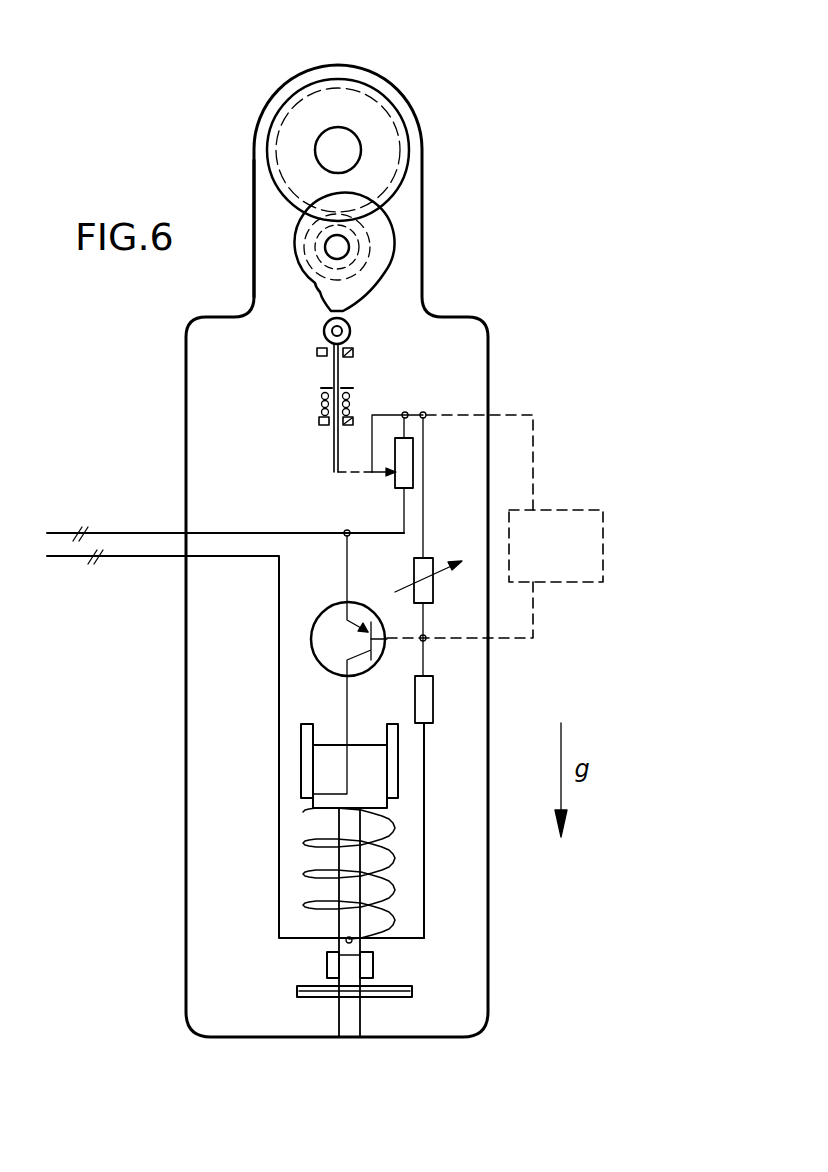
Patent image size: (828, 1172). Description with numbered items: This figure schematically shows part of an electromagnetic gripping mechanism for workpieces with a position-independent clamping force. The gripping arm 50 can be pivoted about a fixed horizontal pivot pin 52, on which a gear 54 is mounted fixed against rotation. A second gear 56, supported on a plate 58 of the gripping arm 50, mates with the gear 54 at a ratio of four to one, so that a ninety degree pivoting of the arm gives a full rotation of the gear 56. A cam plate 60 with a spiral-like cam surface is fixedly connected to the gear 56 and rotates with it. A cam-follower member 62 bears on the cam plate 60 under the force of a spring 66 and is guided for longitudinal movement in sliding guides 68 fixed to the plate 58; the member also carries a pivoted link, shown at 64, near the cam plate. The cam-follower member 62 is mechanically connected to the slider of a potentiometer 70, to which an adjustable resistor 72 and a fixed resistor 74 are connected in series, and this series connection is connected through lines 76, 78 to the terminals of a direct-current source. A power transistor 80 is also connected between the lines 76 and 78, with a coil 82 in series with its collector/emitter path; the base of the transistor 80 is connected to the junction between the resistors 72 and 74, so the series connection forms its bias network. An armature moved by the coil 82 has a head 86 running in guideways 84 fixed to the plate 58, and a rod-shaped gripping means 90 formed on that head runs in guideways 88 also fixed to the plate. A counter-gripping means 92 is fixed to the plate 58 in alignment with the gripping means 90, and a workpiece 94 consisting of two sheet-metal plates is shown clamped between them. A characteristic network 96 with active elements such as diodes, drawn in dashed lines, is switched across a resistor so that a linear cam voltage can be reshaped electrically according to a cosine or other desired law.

The gripping arm 50 is at (488, 378).
The pivot pin 52 is at (343, 140).
The gear 54 is at (382, 147).
The second gear 56 is at (362, 235).
The plate 58 is at (265, 223).
The cam plate 60 is at (377, 265).
The cam-follower member 62 is at (333, 370).
The pivot 64 is at (346, 322).
The spring 66 is at (323, 398).
The sliding guides 68 is at (352, 415).
The potentiometer 70 is at (403, 463).
The adjustable resistor 72 is at (420, 570).
The fixed resistor 74 is at (420, 697).
The line 76 is at (235, 533).
The line 78 is at (218, 560).
The power transistor 80 is at (328, 623).
The coil 82 is at (303, 843).
The guideways 84 is at (306, 743).
The head 86 is at (368, 771).
The guideways 88 is at (327, 962).
The gripping means 90 is at (348, 965).
The counter-gripping means 92 is at (348, 1018).
The workpiece 94 is at (413, 992).
The characteristic network 96 is at (587, 562).